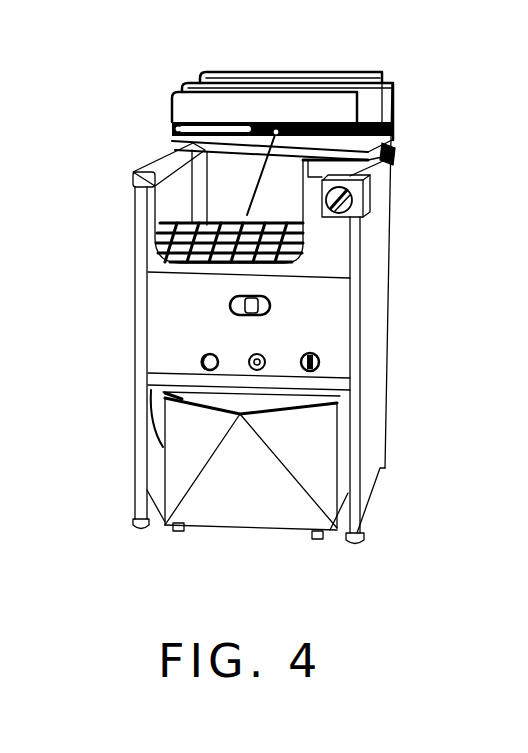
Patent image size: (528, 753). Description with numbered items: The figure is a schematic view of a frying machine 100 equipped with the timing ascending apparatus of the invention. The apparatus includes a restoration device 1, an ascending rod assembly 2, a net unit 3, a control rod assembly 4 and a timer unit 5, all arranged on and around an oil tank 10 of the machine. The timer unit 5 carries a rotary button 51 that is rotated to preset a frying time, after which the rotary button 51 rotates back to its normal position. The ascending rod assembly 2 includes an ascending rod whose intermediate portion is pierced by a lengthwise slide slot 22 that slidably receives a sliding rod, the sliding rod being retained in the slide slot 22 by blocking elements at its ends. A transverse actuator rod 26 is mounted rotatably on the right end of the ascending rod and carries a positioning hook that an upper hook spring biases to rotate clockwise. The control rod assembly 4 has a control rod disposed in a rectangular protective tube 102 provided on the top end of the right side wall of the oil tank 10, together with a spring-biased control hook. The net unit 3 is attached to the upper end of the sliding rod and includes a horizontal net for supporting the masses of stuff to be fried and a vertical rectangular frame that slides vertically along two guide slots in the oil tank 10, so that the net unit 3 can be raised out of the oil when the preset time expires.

The deep fryer 100 is at (488, 257).
The restoration device 1 is at (170, 94).
The ascending rod assembly 2 is at (226, 116).
The slide slot 22 is at (256, 118).
The transverse actuator rod 26 is at (397, 112).
The protective tube 102 is at (393, 153).
The control rod assembly 4 is at (387, 173).
The timer unit 5 is at (369, 248).
The rotary button 51 is at (345, 232).
The net unit 3 is at (173, 219).
The oil tank 10 is at (153, 162).